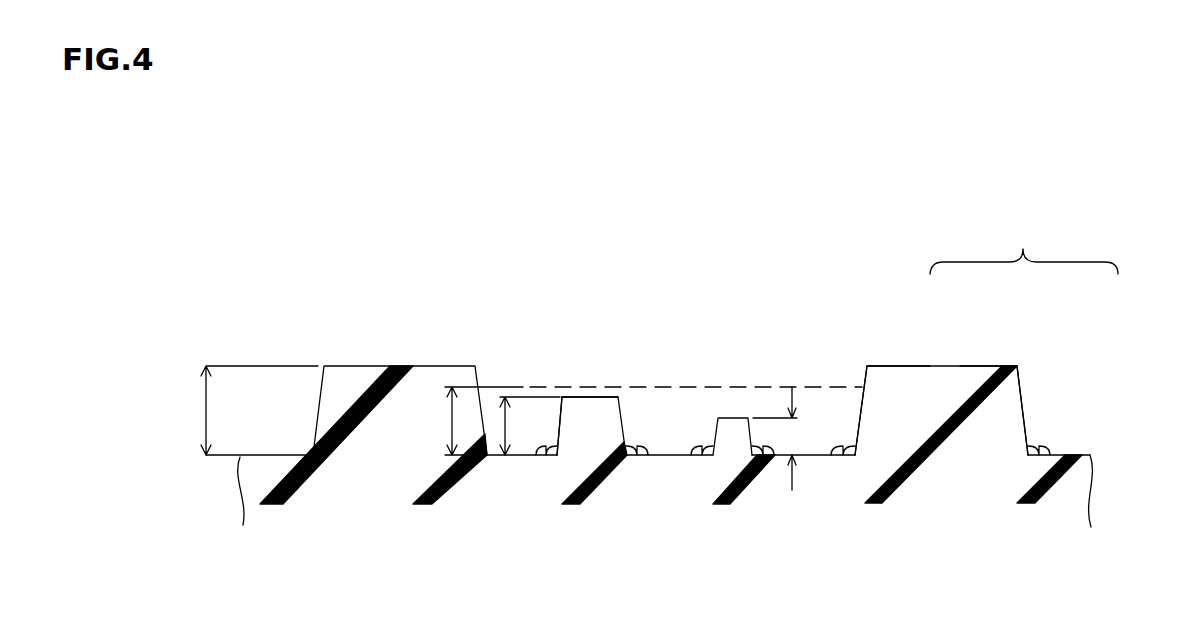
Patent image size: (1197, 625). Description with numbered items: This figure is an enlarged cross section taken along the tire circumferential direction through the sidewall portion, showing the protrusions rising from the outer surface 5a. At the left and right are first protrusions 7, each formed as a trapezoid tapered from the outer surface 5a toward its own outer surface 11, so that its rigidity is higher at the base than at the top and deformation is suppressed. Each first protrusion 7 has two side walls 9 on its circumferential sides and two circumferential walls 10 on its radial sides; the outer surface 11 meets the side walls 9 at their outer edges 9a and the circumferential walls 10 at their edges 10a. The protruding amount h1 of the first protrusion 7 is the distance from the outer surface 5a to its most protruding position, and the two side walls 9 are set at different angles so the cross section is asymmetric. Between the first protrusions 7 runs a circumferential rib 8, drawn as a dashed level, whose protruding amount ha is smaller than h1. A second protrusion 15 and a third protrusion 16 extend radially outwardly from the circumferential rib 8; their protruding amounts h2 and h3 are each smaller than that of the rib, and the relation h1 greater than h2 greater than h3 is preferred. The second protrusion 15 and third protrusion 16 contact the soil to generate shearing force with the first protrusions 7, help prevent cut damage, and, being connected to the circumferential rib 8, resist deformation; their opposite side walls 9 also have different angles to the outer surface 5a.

The outer surface 5a is at (1058, 453).
The first protrusion 7 is at (357, 387).
The circumferential rib 8 is at (643, 387).
The side wall 9 is at (558, 430).
The outer edge of side wall 9a is at (866, 366).
The circumferential wall 10 is at (937, 395).
The edge of circumferential wall 10a is at (897, 366).
The outer surface of protrusion 11 is at (571, 398).
The second protrusion 15 is at (590, 420).
The third protrusion 16 is at (718, 418).
The protruding amount of first protrusion h1 is at (245, 410).
The protruding amount of circumferential rib ha is at (448, 422).
The protruding amount of second protrusion h2 is at (507, 411).
The protruding amount of third protrusion h3 is at (793, 437).